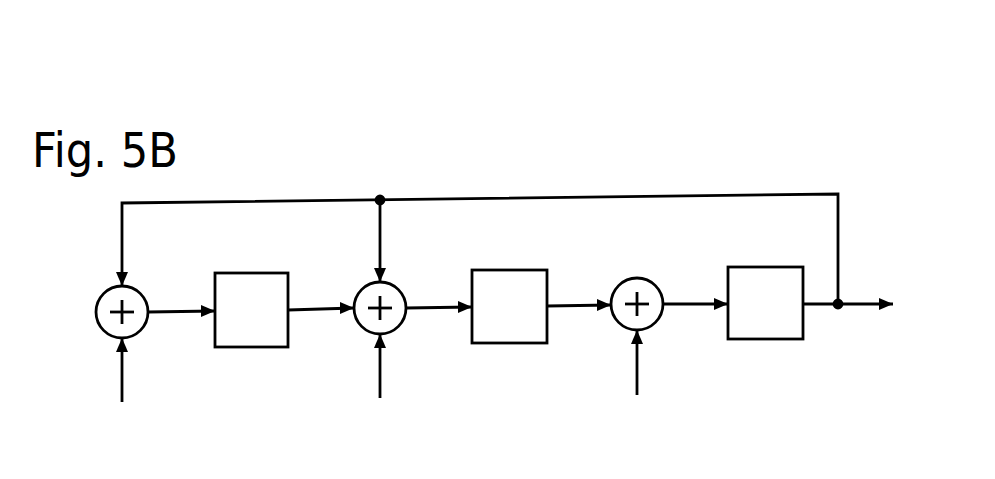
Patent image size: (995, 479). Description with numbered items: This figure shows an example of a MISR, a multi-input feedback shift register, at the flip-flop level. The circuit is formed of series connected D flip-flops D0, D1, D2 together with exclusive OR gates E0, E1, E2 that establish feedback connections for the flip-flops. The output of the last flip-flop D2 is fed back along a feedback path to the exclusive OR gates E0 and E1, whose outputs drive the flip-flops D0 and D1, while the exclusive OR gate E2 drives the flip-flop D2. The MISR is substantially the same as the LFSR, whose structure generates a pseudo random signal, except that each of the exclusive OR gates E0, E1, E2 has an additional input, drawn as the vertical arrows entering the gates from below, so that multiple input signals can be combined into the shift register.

The exclusive OR gate E0 is at (137, 303).
The exclusive OR gate E1 is at (393, 300).
The exclusive OR gate E2 is at (650, 296).
The D flip-flop D0 is at (251, 310).
The D flip-flop D1 is at (509, 306).
The D flip-flop D2 is at (765, 303).